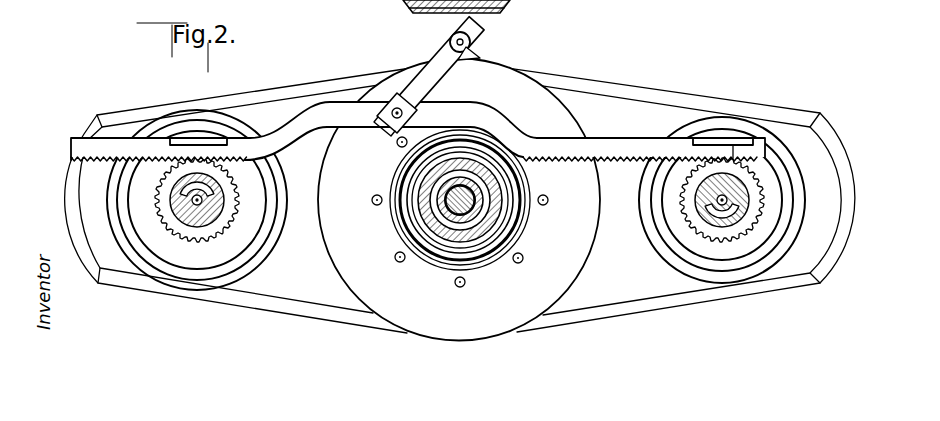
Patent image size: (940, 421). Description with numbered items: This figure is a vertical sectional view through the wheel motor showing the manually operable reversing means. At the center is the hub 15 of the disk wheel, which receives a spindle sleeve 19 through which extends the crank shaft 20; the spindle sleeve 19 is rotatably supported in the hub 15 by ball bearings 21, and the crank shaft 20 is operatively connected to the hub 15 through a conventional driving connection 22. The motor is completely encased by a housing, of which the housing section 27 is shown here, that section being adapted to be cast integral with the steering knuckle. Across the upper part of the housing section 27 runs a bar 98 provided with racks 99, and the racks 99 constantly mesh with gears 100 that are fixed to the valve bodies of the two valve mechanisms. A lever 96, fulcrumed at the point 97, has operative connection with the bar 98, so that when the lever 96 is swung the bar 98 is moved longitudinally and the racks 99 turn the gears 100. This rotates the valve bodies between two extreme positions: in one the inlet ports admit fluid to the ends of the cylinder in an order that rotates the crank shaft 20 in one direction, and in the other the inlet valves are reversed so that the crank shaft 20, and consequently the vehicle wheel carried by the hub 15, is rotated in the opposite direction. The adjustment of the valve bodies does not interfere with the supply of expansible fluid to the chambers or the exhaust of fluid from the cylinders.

The hub 15 is at (447, 230).
The spindle sleeve 19 is at (473, 227).
The crank shaft 20 is at (466, 205).
The ball bearings 21 is at (509, 9).
The driving connection 22 is at (403, 7).
The housing section 27 is at (633, 115).
The lever 96 is at (432, 77).
The fulcrum point 97 is at (452, 37).
The bar 98 is at (495, 125).
The racks 99 is at (95, 161).
The gears 100 is at (223, 233).